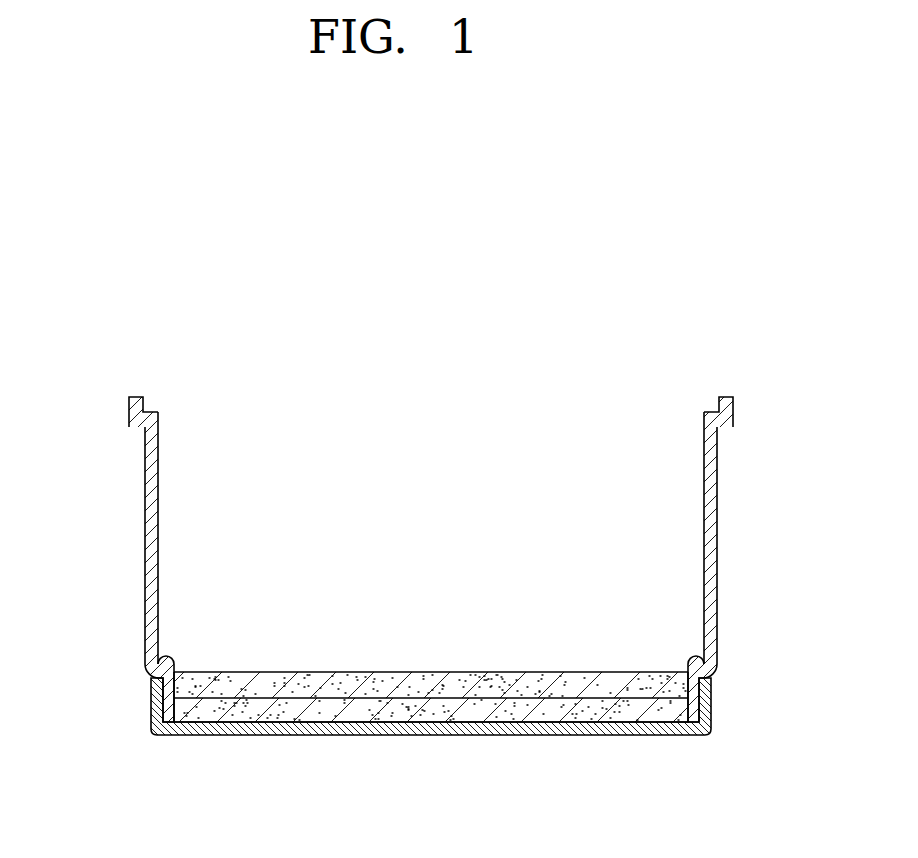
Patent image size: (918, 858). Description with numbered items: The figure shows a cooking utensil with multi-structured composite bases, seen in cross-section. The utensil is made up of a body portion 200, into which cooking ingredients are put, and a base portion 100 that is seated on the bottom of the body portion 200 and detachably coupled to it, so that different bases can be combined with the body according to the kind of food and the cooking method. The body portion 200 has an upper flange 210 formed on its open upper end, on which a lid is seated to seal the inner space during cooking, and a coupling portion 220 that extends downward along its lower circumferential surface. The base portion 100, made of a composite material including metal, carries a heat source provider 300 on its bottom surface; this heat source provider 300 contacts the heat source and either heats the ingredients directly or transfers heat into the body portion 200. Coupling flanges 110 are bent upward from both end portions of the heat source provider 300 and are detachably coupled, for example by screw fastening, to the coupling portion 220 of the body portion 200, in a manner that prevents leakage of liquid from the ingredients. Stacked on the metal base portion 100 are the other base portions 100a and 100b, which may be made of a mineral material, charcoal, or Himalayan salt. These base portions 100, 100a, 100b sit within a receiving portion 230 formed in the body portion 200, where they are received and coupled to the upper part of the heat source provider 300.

The base portion 100 is at (428, 507).
The base portion 100a is at (367, 697).
The base portion 100b is at (510, 672).
The coupling flange 110 is at (152, 712).
The body portion 200 is at (134, 543).
The upper flange 210 is at (129, 412).
The coupling portion 220 is at (158, 697).
The receiving portion 230 is at (409, 708).
The heat source provider 300 is at (244, 736).